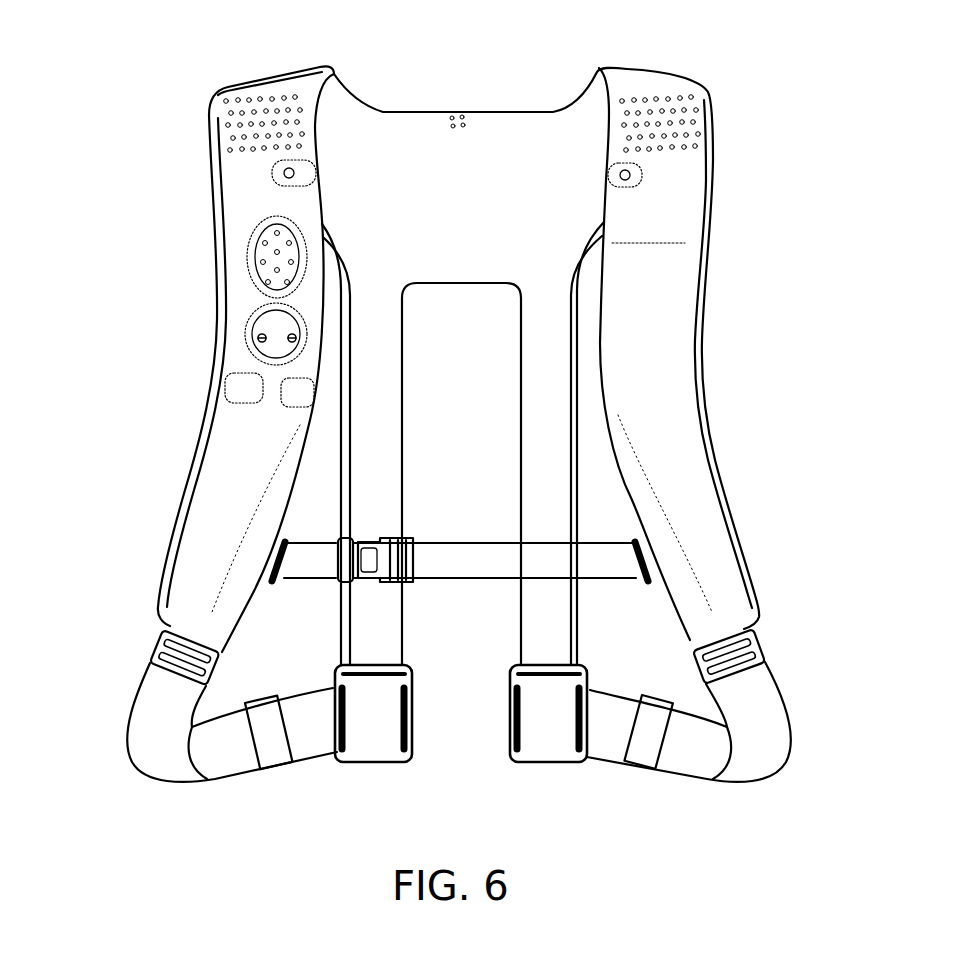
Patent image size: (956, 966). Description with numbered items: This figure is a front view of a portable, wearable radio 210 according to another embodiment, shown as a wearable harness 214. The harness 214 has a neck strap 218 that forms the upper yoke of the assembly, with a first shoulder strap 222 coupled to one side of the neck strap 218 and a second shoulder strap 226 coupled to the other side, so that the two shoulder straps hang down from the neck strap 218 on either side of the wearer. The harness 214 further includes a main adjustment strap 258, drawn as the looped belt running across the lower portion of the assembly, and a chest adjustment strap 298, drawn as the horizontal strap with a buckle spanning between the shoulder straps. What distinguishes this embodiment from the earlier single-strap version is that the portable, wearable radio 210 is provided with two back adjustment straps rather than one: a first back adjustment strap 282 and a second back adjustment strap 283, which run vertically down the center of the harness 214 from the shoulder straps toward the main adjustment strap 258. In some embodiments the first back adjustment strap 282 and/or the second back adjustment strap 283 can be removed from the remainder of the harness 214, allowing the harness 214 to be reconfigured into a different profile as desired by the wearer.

The portable, wearable radio 210 is at (139, 64).
The harness 214 is at (517, 100).
The neck strap 218 is at (410, 121).
The first shoulder strap 222 is at (210, 250).
The second shoulder strap 226 is at (715, 213).
The main adjustment strap 258 is at (200, 764).
The first back adjustment strap 282 is at (360, 425).
The second back adjustment strap 283 is at (560, 397).
The chest adjustment strap 298 is at (463, 540).